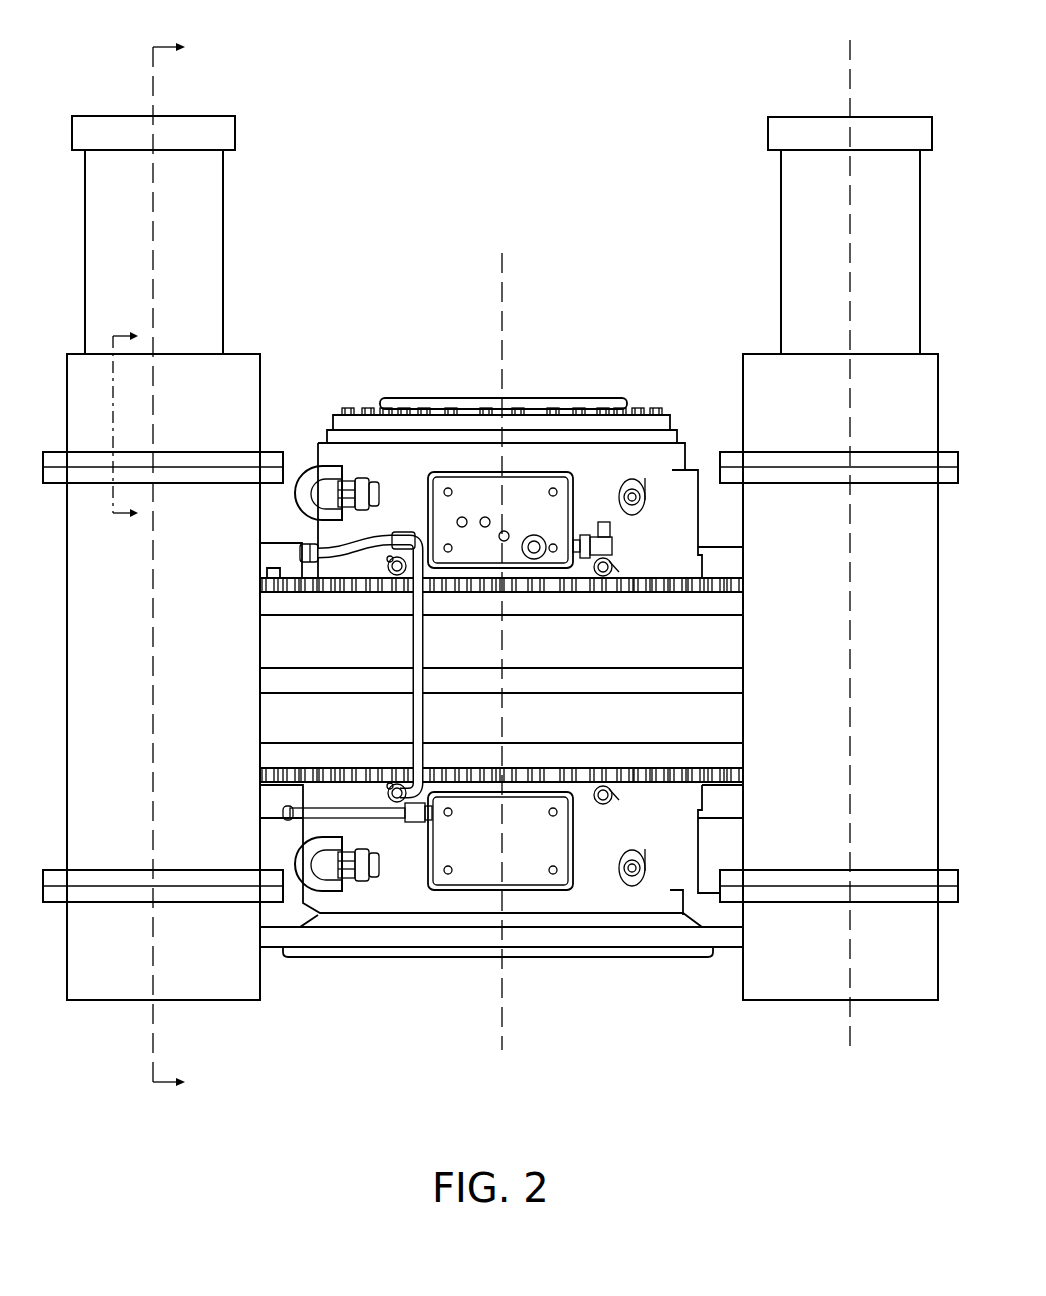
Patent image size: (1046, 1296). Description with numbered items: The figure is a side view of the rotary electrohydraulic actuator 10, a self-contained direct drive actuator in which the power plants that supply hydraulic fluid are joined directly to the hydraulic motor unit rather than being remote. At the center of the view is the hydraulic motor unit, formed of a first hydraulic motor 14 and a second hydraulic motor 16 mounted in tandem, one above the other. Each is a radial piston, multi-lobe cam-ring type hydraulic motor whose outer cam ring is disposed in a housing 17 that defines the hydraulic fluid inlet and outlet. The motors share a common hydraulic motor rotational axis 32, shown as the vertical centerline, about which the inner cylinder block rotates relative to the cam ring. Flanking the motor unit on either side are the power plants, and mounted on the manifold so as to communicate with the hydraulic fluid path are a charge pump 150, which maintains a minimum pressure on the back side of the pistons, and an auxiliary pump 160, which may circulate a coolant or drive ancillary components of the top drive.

The rotary electrohydraulic actuator 10 is at (413, 78).
The first hydraulic motor 14 is at (378, 460).
The second hydraulic motor 16 is at (592, 907).
The housing 17 is at (630, 470).
The hydraulic motor rotational axis 32 is at (502, 322).
The charge pump 150 is at (835, 268).
The auxiliary pump 160 is at (215, 268).